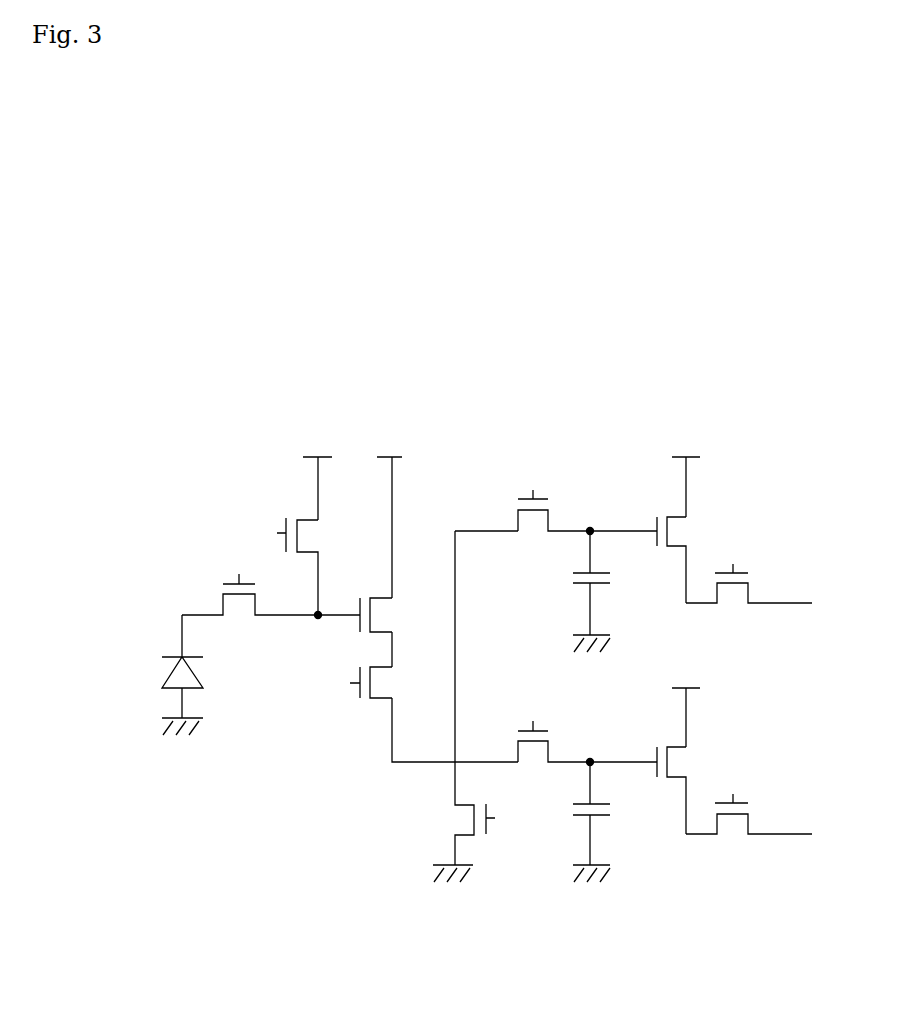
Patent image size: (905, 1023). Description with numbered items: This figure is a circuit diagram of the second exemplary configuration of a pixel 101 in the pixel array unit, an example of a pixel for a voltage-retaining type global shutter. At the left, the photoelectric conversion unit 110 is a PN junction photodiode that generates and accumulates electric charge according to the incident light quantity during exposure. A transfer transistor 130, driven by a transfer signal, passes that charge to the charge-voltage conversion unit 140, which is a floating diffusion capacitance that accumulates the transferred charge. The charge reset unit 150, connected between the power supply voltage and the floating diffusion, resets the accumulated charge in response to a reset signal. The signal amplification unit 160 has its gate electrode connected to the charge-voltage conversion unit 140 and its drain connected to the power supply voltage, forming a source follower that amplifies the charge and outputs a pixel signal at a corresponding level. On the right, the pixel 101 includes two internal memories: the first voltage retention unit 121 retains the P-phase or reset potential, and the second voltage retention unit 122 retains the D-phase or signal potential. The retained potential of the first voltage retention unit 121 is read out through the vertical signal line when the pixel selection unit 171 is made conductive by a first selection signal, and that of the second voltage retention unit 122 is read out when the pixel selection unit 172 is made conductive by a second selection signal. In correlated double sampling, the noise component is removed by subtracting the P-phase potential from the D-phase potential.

The pixel 101 is at (481, 445).
The photoelectric conversion unit 110 is at (209, 683).
The first voltage retention unit 121 is at (606, 569).
The second voltage retention unit 122 is at (606, 800).
The transfer transistor TRG 130 is at (241, 623).
The charge-voltage conversion unit 140 is at (315, 627).
The charge reset unit 150 is at (324, 539).
The signal amplification unit 160 is at (397, 618).
The pixel selection unit 171 is at (734, 611).
The pixel selection unit 172 is at (734, 842).